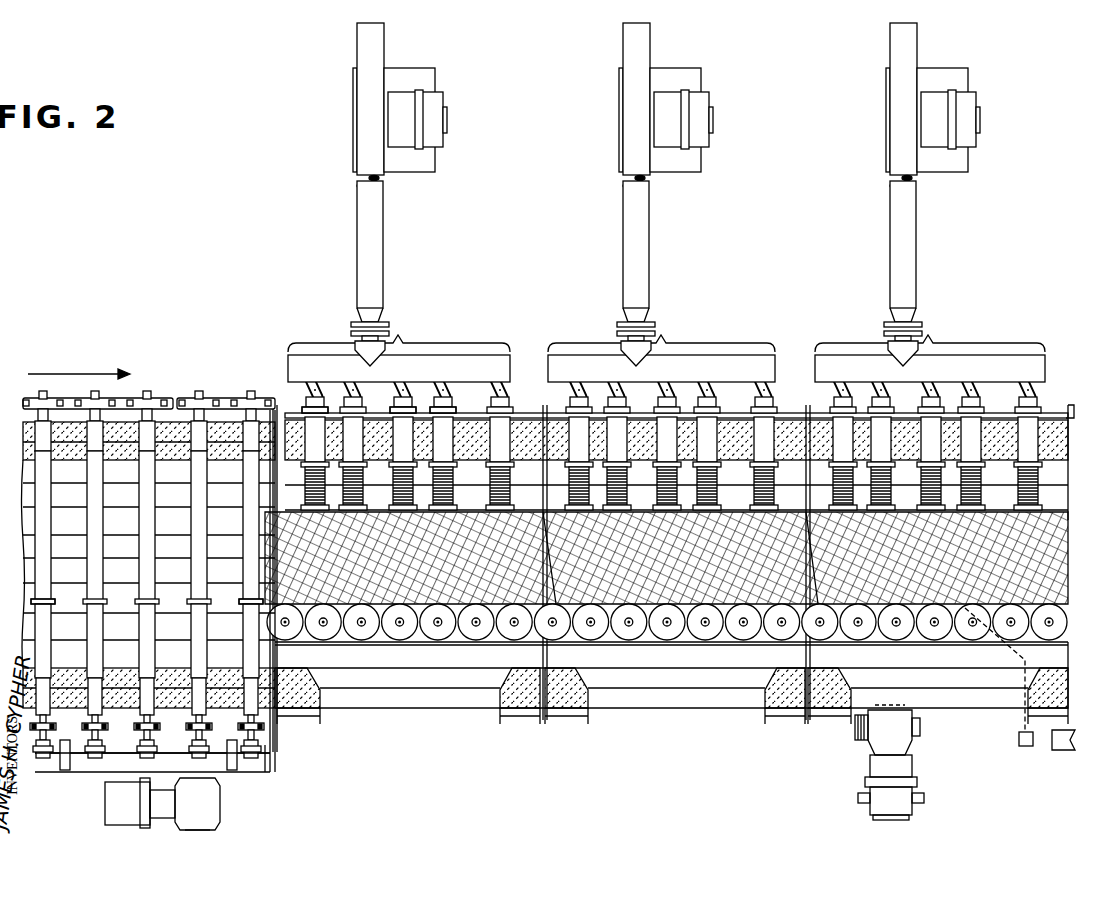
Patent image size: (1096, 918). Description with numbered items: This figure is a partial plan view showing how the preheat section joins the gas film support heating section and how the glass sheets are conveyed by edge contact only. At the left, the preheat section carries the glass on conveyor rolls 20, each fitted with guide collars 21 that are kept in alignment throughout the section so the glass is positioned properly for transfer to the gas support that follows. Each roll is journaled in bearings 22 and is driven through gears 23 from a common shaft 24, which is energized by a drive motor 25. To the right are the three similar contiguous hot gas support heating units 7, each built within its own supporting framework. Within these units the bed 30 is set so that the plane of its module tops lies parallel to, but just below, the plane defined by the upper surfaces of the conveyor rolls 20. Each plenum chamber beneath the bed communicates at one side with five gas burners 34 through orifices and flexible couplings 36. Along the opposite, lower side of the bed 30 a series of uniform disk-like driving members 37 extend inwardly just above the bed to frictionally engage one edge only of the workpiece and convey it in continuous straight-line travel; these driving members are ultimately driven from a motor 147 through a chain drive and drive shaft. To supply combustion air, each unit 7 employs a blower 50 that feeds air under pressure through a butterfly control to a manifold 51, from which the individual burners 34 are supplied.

The hot gas support heating unit 7 is at (666, 194).
The conveyor roll 20 is at (193, 528).
The guide collar 21 is at (240, 600).
The bearing 22 is at (185, 398).
The gear 23 is at (245, 752).
The common shaft 24 is at (272, 778).
The drive motor 25 is at (162, 804).
The bed 30 is at (505, 535).
The gas burner 34 is at (455, 412).
The flexible coupling 36 is at (490, 492).
The driving member 37 is at (738, 640).
The blower 50 is at (890, 50).
The manifold 51 is at (548, 365).
The motor 147 is at (912, 808).